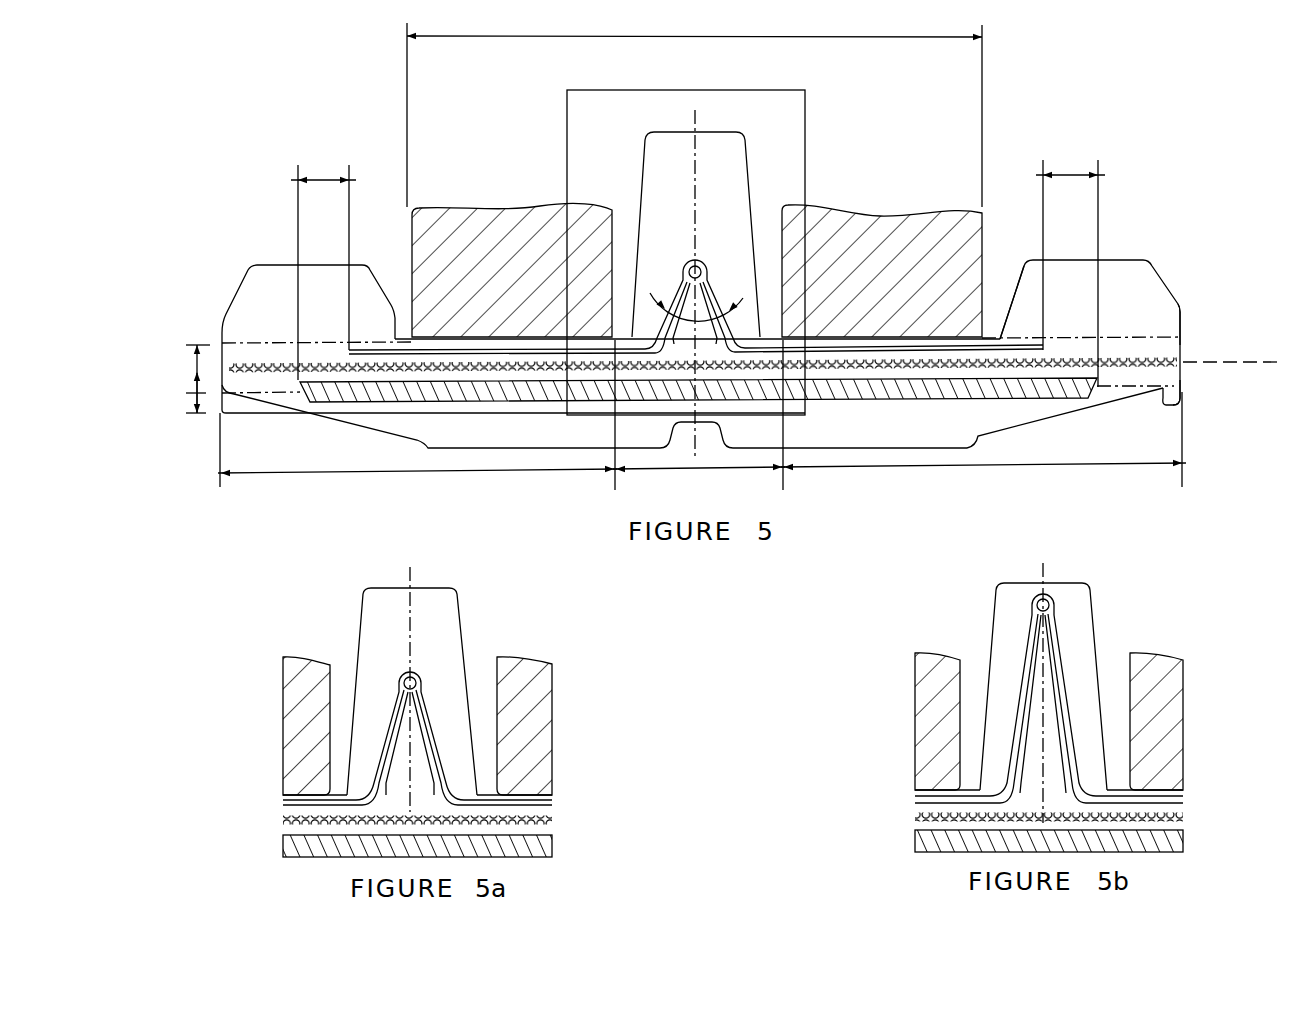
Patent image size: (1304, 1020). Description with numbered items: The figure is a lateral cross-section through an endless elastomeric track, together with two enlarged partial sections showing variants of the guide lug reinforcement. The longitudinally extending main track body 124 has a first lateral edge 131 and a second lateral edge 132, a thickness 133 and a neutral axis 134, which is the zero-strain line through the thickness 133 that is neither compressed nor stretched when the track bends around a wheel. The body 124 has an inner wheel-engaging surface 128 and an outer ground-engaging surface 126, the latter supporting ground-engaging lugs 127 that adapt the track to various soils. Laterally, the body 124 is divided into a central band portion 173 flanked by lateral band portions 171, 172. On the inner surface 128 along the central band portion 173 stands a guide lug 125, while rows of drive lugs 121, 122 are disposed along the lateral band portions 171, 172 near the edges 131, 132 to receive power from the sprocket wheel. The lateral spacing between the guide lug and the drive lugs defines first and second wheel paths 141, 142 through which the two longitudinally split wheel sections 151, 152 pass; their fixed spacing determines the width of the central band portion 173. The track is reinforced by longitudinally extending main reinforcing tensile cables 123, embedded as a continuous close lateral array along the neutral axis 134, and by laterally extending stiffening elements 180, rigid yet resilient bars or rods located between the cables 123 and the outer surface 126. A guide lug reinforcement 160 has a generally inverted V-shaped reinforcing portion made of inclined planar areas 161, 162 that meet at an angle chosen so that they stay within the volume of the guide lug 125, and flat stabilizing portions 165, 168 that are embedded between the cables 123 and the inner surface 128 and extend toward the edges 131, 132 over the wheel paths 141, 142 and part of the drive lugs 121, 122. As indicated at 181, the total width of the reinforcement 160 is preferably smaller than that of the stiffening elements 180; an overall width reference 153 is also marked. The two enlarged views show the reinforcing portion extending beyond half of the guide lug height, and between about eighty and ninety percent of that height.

In FIG. 5, the drive lug 121 is at (1124, 252).
In FIG. 5, the drive lug 122 is at (277, 255).
In FIG. 5, the main reinforcing tensile cables 123 is at (270, 354).
In FIG. 5, the main track body 124 is at (1185, 402).
In FIG. 5, the guide lug 125 is at (726, 125).
In FIG. 5, the outer ground-engaging surface 126 is at (1155, 397).
In FIG. 5, the ground-engaging lugs 127 is at (352, 434).
In FIG. 5, the inner wheel-engaging surface 128 is at (991, 325).
In FIG. 5, the first lateral edge 131 is at (1190, 331).
In FIG. 5, the second lateral edge 132 is at (200, 335).
In FIG. 5, the thickness 133 is at (188, 375).
In FIG. 5, the neutral axis 134 is at (1278, 367).
In FIG. 5, the first wheel path 141 is at (1007, 188).
In FIG. 5, the second wheel path 142 is at (380, 160).
In FIG. 5, the wheel section 151 is at (954, 202).
In FIG. 5, the wheel section 152 is at (537, 197).
In FIG. 5, the overall width dimension 153 is at (836, 42).
In FIG. 5, the guide lug reinforcement 160 is at (710, 250).
In FIG. 5A, the guide lug reinforcement 160 is at (423, 662).
In FIG. 5B, the guide lug reinforcement 160 is at (1063, 615).
In FIG. 5, the inclined planar area 161 is at (722, 272).
In FIG. 5, the inclined planar area 162 is at (672, 272).
In FIG. 5, the stabilizing portion 165 is at (1054, 349).
In FIG. 5, the stabilizing portion 168 is at (341, 346).
In FIG. 5, the lateral band portion 171 is at (990, 475).
In FIG. 5, the lateral band portion 172 is at (392, 476).
In FIG. 5, the central band portion 173 is at (703, 478).
In FIG. 5, the stiffening elements 180 is at (935, 406).
In FIG. 5, the width comparison 181 is at (318, 174).